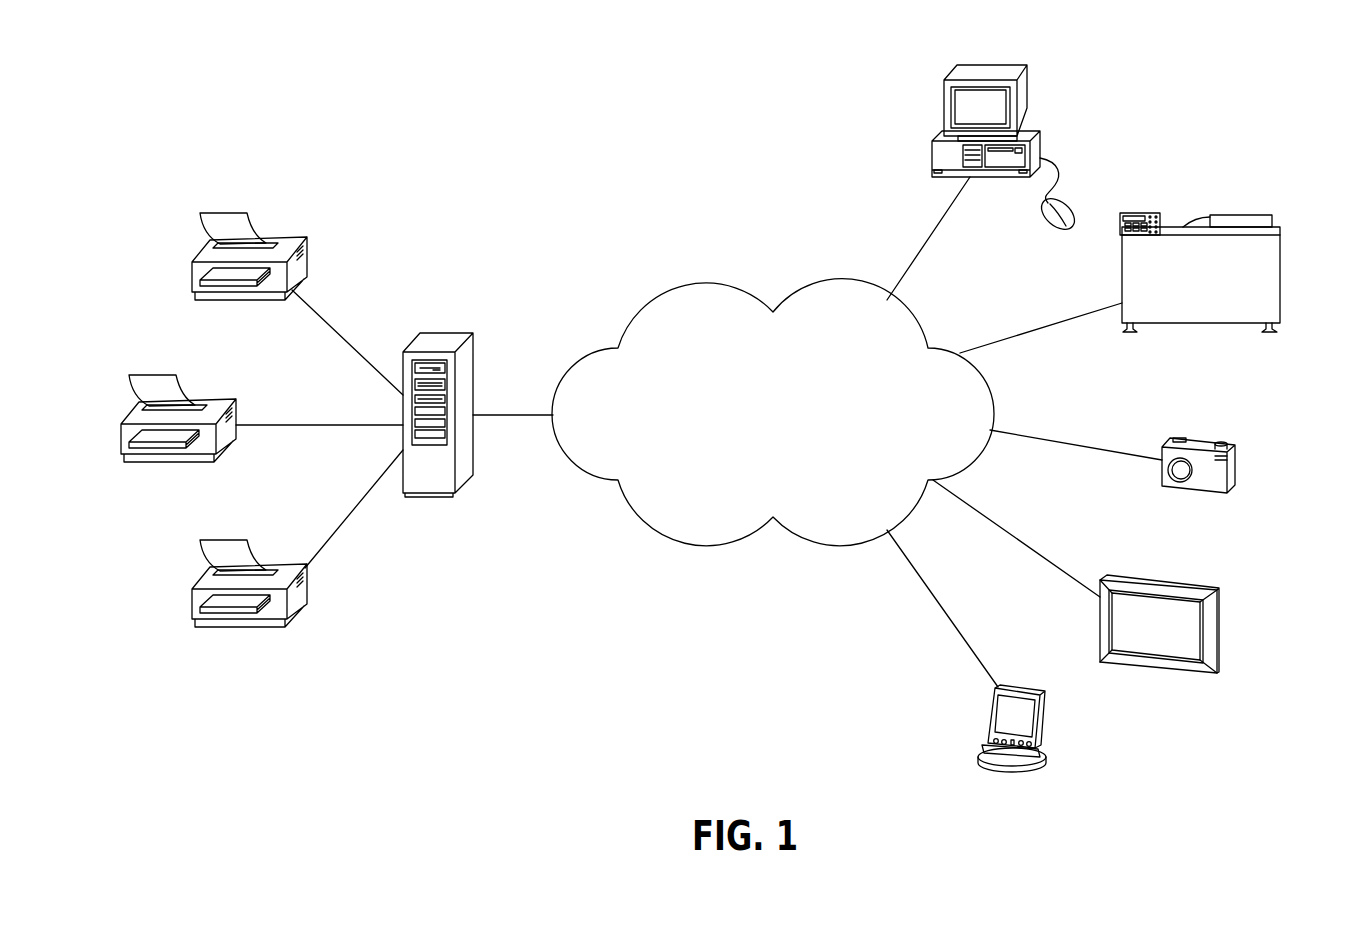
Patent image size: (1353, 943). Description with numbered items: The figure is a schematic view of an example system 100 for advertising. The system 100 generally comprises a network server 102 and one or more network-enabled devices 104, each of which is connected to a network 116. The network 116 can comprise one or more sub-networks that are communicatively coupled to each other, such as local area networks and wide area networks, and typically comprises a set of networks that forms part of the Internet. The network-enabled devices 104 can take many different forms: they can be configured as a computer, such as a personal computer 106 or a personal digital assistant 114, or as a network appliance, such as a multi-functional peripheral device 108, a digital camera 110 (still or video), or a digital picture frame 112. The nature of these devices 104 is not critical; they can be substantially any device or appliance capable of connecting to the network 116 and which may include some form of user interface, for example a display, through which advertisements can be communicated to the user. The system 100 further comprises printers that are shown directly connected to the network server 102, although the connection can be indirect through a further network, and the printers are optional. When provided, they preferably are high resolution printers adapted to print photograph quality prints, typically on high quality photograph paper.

The system for advertising 100 is at (380, 110).
The network server 102 is at (503, 324).
The network-enabled devices 104 is at (1066, 95).
The personal computer 106 is at (930, 158).
The multi-functional peripheral device 108 is at (1273, 302).
The digital camera 110 is at (1218, 485).
The digital picture frame 112 is at (1147, 580).
The personal digital assistant 114 is at (1040, 727).
The network 116 is at (789, 438).